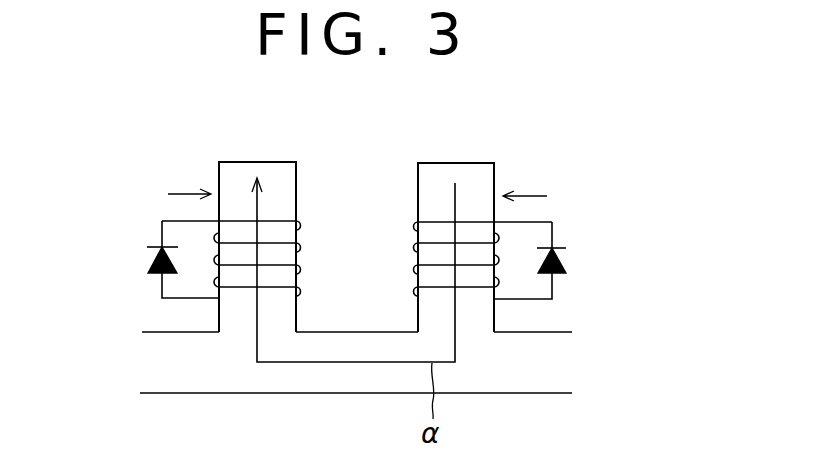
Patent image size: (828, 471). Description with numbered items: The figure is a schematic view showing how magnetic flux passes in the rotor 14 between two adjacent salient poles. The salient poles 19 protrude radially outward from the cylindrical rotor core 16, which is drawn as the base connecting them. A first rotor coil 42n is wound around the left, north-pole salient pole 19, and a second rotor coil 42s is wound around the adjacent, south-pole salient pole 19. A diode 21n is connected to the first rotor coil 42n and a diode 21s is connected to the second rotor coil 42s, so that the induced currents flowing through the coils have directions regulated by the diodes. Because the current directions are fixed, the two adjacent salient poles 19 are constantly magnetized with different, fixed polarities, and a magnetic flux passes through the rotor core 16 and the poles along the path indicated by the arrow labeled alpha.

The rotor 14 is at (569, 132).
The rotor core 16 is at (550, 363).
The salient pole 19 is at (228, 170).
The diode 21n is at (155, 261).
The diode 21s is at (562, 263).
The first rotor coil 42n is at (302, 219).
The second rotor coil 42s is at (410, 293).